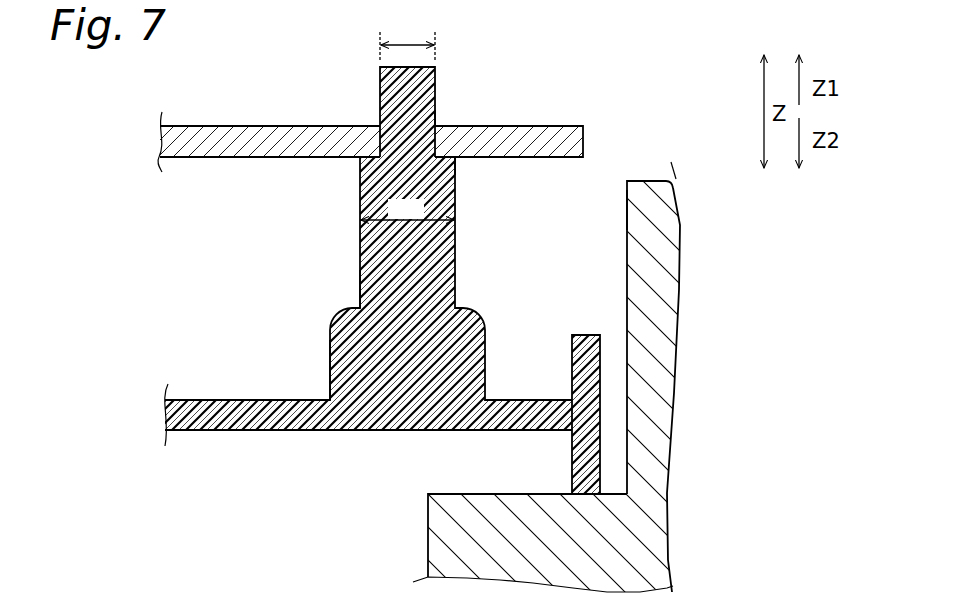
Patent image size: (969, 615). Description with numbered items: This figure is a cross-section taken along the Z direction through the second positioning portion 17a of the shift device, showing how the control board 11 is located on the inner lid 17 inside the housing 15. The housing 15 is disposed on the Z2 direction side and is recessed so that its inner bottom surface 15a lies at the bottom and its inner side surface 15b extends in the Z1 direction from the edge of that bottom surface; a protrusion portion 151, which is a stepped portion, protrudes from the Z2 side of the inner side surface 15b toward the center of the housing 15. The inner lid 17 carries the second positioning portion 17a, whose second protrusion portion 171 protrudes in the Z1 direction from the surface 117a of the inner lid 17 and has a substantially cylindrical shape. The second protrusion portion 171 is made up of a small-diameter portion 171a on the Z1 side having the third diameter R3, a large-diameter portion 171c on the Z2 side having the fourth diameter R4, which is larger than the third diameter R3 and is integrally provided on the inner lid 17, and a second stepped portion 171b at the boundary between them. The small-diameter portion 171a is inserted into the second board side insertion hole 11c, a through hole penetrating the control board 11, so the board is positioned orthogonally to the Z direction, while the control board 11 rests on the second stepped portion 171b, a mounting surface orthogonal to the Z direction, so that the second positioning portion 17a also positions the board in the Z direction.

The control board 11 is at (278, 126).
The second board side insertion hole 11c is at (436, 120).
The inner lid 17 is at (382, 280).
The second positioning portion 17a is at (308, 243).
The surface of the inner lid 117a is at (217, 395).
The second protrusion portion 171 is at (401, 187).
The small-diameter portion 171a is at (380, 96).
The second stepped portion 171b is at (458, 153).
The large-diameter portion 171c is at (360, 292).
The protrusion portion 151 is at (477, 493).
The housing 15 is at (513, 350).
The inner bottom surface 15a is at (425, 518).
The inner side surface 15b is at (625, 207).
The third diameter R3 is at (407, 39).
The fourth diameter R4 is at (407, 210).